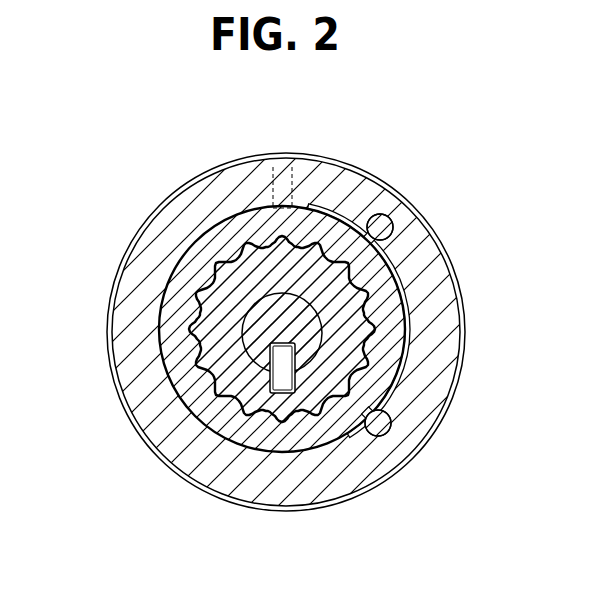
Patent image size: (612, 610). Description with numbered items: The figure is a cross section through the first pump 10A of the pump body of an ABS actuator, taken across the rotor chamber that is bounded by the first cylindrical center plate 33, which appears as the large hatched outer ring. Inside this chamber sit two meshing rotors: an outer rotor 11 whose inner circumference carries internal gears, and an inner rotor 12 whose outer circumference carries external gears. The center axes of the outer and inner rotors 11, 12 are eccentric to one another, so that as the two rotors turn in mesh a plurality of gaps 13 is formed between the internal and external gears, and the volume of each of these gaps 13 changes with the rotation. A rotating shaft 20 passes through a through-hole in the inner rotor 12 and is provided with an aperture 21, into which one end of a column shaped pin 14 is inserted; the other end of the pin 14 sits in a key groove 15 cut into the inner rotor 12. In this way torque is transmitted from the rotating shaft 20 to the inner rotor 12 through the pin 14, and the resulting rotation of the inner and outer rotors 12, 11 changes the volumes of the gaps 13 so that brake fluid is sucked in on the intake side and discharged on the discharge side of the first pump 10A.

The first pump 10A is at (235, 150).
The outer rotor 11 is at (347, 237).
The inner rotor 12 is at (323, 397).
The gaps 13 is at (318, 243).
The column shaped pin 14 is at (266, 398).
The key groove 15 is at (283, 420).
The rotating shaft 20 is at (213, 392).
The aperture 21 is at (268, 364).
The first cylindrical center plate 33 is at (197, 212).